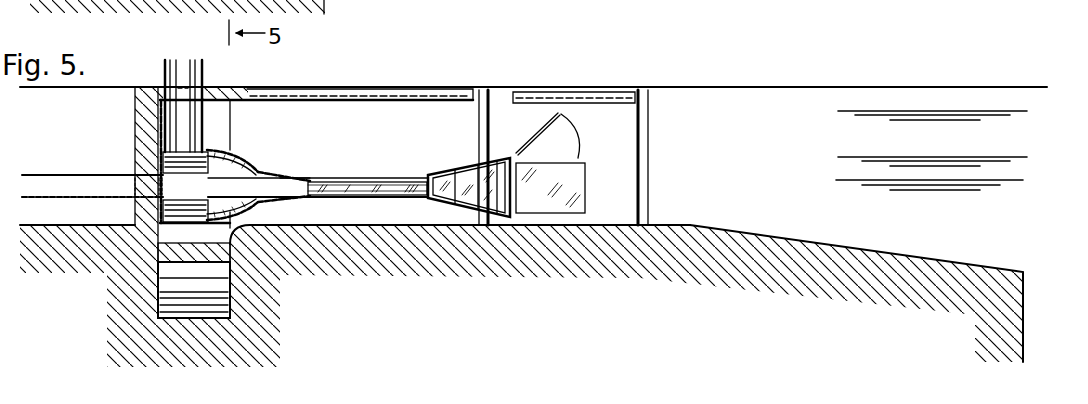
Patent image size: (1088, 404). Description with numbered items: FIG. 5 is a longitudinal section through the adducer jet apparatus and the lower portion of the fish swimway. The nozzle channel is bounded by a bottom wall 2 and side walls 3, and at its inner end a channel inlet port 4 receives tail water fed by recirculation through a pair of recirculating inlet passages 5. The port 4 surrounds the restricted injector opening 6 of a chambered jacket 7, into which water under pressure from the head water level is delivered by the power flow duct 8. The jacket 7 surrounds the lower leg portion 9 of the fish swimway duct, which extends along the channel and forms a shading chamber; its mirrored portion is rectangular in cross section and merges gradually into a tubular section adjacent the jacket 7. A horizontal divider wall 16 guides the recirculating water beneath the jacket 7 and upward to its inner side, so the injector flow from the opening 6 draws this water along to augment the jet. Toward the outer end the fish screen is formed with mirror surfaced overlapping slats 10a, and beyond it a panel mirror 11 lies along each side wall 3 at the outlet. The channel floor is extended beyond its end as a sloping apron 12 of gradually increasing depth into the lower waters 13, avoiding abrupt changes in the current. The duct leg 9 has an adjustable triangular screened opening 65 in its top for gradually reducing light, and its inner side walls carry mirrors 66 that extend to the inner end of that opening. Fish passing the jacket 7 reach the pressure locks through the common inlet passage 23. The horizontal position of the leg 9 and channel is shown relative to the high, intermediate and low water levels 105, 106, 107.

The bottom wall 2 is at (417, 224).
The side walls 3 is at (446, 100).
The channel inlet port 4 is at (239, 151).
The recirculating inlet passages 5 is at (167, 285).
The injector opening 6 is at (267, 171).
The chambered jacket 7 is at (227, 150).
The power flow duct 8 is at (165, 72).
The lower leg portion of fish swimway duct 9 is at (349, 178).
The mirror surfaced overlapping slats 10a is at (503, 169).
The panel mirror 11 is at (587, 185).
The sloping apron 12 is at (836, 247).
The lower waters 13 is at (818, 105).
The horizontal divider wall 16 is at (214, 243).
The common inlet passage 23 is at (119, 175).
The triangular screened opening 65 is at (361, 182).
The mirror 66 is at (398, 186).
The high water level 105 is at (1030, 111).
The intermediate water level 106 is at (1030, 157).
The low water level 107 is at (1030, 180).